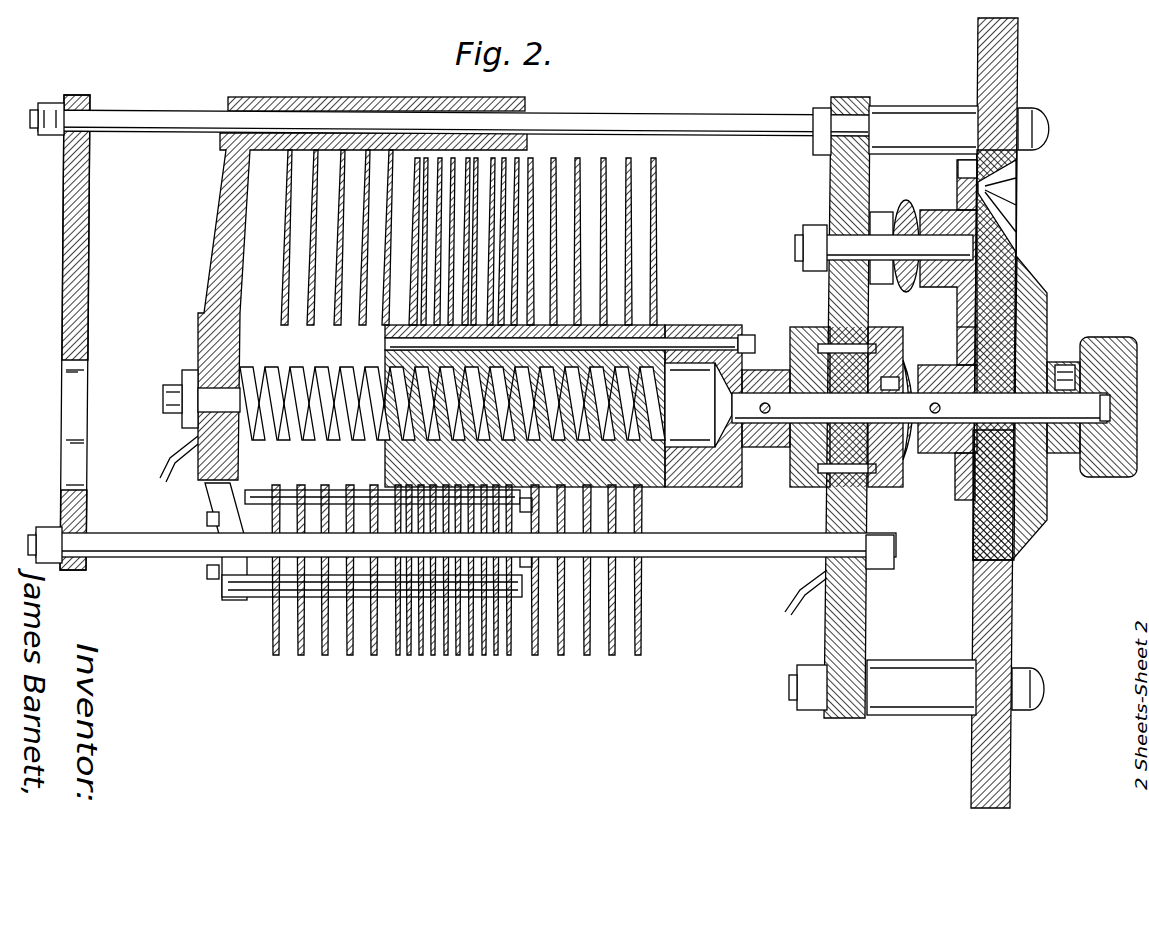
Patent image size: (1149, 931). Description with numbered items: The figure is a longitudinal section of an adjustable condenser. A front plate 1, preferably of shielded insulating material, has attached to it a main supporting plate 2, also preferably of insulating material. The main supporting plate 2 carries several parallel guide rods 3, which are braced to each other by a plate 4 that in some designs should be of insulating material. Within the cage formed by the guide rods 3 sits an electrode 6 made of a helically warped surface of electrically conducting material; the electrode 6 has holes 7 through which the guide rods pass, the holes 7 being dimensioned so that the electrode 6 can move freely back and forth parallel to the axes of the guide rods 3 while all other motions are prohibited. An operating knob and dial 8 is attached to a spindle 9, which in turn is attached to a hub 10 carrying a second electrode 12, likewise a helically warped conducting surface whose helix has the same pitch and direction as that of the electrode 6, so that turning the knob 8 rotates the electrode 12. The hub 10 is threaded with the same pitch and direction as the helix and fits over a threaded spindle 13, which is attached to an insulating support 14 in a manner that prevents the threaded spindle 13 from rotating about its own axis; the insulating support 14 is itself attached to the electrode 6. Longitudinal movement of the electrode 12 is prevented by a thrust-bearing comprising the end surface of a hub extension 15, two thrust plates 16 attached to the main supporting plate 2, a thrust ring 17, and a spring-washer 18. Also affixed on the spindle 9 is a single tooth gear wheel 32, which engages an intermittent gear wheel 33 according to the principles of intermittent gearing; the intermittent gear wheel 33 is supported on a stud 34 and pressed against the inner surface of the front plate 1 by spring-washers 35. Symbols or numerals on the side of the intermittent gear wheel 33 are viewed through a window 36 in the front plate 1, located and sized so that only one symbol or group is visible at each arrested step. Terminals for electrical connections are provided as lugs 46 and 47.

The front plate 1 is at (1000, 78).
The main supporting plate 2 is at (830, 190).
The guide rods 3 is at (160, 118).
The plate 4 is at (90, 262).
The electrode 6 is at (268, 628).
The holes 7 is at (377, 105).
The operating knob and dial 8 is at (1033, 325).
The spindle 9 is at (792, 408).
The hub 10 is at (653, 485).
The electrode 12 is at (645, 623).
The threaded spindle 13 is at (258, 372).
The insulating support 14 is at (218, 270).
The hub extension 15 is at (733, 487).
The thrust plates 16 is at (815, 487).
The thrust ring 17 is at (893, 478).
The spring-washer 18 is at (910, 455).
The single tooth gear wheel 32 is at (965, 345).
The intermittent gear wheel 33 is at (965, 300).
The stud 34 is at (905, 215).
The spring-washers 35 is at (915, 235).
The window 36 is at (985, 188).
The lug 46 is at (165, 485).
The lug 47 is at (790, 618).